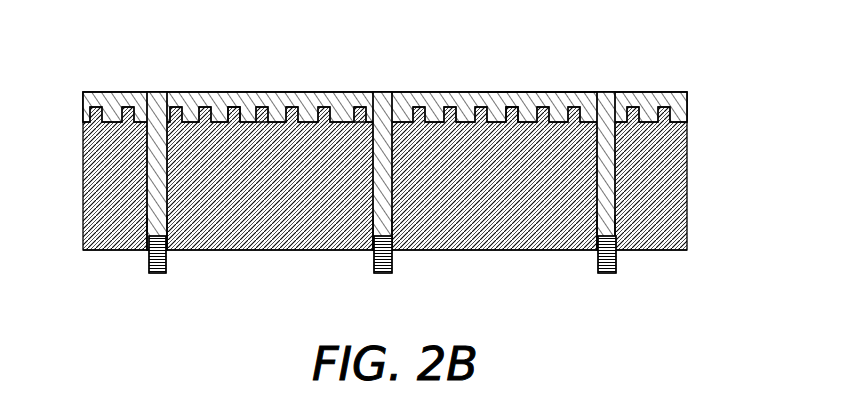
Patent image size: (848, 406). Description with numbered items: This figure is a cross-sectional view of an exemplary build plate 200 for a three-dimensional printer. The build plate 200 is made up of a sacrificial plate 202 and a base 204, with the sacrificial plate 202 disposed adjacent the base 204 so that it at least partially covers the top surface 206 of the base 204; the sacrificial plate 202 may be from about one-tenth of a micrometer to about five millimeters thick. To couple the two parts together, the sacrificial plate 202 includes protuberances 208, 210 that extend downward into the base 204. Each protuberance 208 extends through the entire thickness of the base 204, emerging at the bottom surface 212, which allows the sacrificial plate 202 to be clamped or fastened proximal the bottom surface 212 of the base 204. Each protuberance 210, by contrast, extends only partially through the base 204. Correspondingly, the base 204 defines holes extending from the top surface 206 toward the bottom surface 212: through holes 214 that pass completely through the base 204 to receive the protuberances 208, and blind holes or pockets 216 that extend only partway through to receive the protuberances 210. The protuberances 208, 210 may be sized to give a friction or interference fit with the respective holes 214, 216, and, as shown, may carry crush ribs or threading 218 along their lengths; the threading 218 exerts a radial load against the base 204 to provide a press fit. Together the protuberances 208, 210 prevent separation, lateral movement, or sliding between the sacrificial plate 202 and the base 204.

The build plate 200 is at (390, 162).
The sacrificial plate 202 is at (641, 92).
The base 204 is at (687, 233).
The top surface 206 is at (553, 107).
The protuberance 208 is at (377, 219).
The protuberance 210 is at (220, 122).
The bottom surface 212 is at (502, 250).
The through hole 214 is at (401, 146).
The blind hole 216 is at (360, 126).
The threading 218 is at (168, 260).